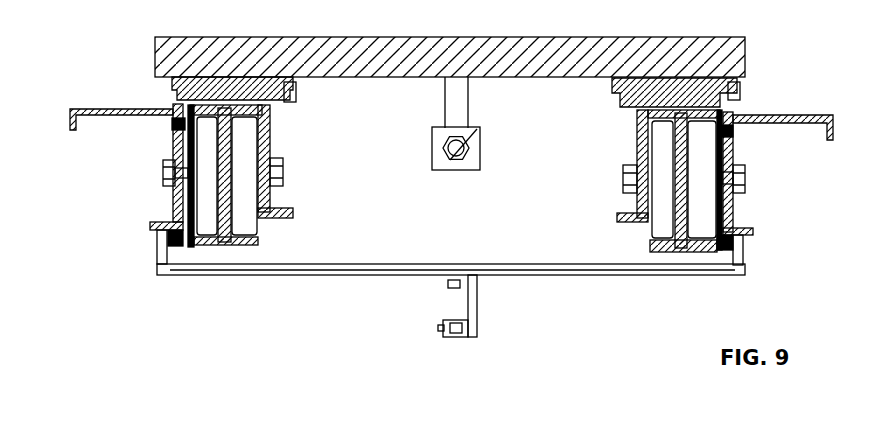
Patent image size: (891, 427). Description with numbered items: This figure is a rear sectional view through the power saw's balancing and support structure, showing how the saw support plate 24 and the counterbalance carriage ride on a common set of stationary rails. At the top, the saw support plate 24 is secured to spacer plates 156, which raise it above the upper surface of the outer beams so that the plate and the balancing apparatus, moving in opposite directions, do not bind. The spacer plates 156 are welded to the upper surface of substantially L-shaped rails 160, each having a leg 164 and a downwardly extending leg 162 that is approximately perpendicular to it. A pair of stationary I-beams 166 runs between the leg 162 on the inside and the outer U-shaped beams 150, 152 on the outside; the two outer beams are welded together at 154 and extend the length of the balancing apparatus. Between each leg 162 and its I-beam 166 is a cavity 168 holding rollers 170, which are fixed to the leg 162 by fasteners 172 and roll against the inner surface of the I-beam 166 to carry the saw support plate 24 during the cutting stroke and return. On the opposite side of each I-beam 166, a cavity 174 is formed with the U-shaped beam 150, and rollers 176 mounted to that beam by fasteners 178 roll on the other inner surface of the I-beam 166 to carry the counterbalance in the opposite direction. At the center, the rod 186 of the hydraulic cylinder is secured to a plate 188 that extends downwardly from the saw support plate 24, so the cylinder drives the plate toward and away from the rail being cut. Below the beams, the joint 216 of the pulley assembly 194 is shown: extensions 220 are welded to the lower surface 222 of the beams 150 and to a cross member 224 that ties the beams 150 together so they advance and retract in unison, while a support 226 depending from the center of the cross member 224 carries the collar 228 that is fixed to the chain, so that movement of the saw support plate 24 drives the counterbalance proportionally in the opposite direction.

The saw support plate 24 is at (484, 37).
The U-shaped beam 150 is at (178, 212).
The U-shaped beam 152 is at (110, 108).
The weld 154 is at (172, 124).
The spacer plate 156 is at (296, 90).
The L-shaped rail 160 is at (784, 67).
The leg 162 is at (280, 132).
The leg 164 is at (172, 97).
The I-beam 166 is at (678, 246).
The cavity 168 is at (262, 238).
The roller 170 is at (275, 215).
The fastener 172 is at (283, 172).
The cavity 174 is at (186, 240).
The roller 176 is at (705, 215).
The fastener 178 is at (165, 178).
The rod 186 is at (479, 131).
The plate 188 is at (462, 98).
The pulley assembly 194 is at (572, 319).
The joint 216 is at (451, 288).
The extension 220 is at (160, 250).
The lower surface 222 is at (152, 230).
The cross member 224 is at (690, 276).
The support 226 is at (480, 315).
The collar 228 is at (466, 338).